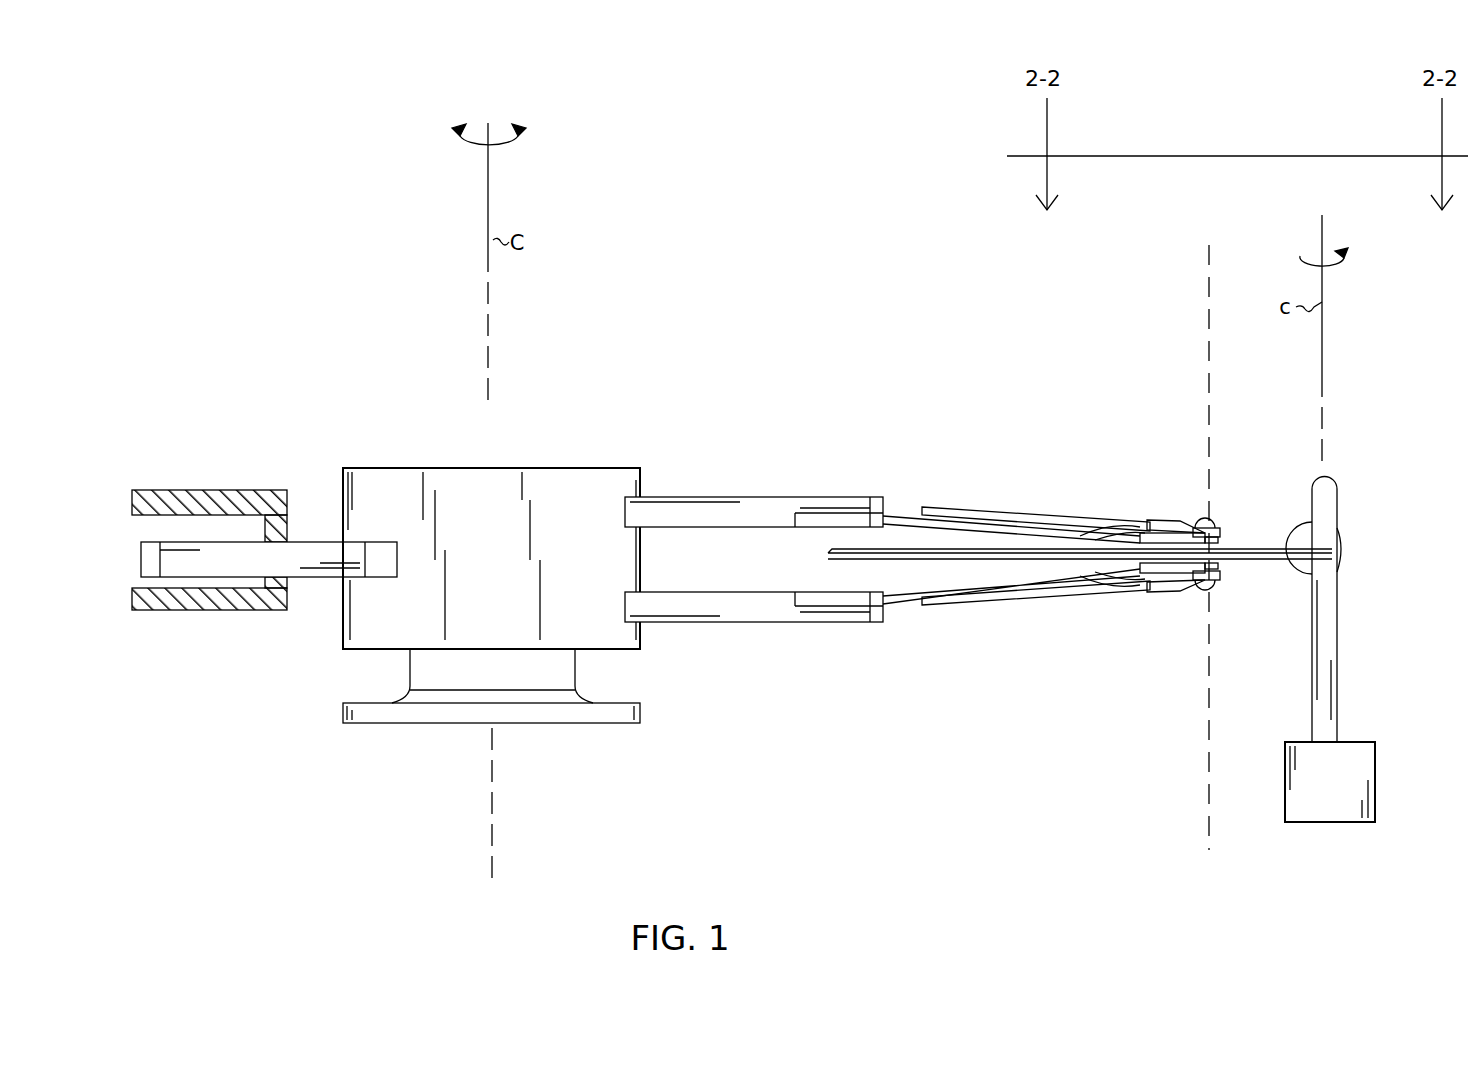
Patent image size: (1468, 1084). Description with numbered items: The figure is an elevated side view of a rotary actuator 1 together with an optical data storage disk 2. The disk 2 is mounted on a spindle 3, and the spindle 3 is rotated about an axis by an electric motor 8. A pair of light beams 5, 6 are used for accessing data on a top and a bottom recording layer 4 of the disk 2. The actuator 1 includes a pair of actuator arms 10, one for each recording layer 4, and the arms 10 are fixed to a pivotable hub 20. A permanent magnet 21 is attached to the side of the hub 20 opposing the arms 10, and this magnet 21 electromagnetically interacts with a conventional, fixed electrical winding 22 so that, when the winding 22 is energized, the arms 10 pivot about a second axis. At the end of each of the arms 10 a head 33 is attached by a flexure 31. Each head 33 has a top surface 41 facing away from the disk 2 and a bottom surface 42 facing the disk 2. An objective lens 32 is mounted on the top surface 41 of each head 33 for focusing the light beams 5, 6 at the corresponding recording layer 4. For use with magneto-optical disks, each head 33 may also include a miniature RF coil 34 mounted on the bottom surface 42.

The rotary actuator 1 is at (300, 630).
The optical data storage disk 2 is at (828, 555).
The spindle 3 is at (1312, 690).
The recording layer 4 is at (1286, 543).
The light beam 5 is at (1213, 390).
The light beam 6 is at (1211, 680).
The electric motor 8 is at (1376, 790).
The actuator arm 10 is at (715, 497).
The pivotable hub 20 is at (554, 468).
The permanent magnet 21 is at (305, 542).
The electrical winding 22 is at (205, 490).
The flexure 31 is at (1002, 512).
The objective lens 32 is at (1200, 518).
The head 33 is at (1100, 522).
The miniature RF coil 34 is at (1140, 542).
The top surface 41 is at (1150, 500).
The bottom surface 42 is at (1076, 520).